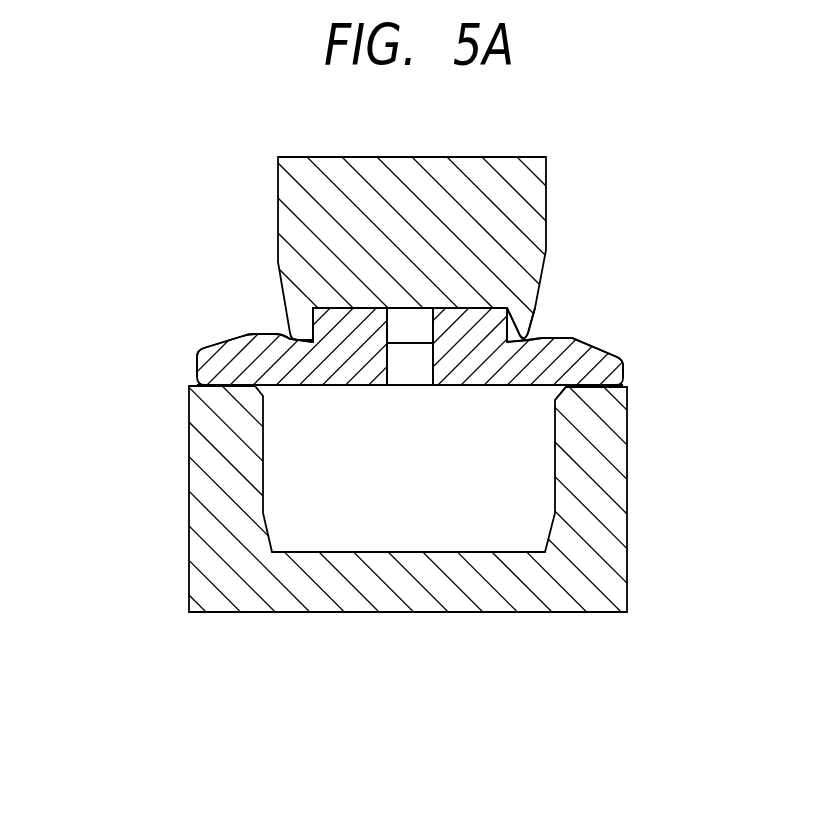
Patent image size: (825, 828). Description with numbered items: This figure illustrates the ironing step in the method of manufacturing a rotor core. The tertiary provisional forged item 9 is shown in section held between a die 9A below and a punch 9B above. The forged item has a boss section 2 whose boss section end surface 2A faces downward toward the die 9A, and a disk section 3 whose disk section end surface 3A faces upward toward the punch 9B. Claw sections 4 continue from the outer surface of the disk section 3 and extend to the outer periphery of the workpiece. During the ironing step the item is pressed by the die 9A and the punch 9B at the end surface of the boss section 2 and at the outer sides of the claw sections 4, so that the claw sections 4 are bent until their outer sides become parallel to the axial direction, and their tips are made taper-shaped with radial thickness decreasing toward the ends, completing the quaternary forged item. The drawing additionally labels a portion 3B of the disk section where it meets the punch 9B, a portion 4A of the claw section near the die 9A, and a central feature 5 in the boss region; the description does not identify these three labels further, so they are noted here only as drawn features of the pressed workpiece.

The boss section 2 is at (458, 322).
The boss section end surface 2A is at (468, 322).
The disk section 3 is at (520, 368).
The disk section end surface 3A is at (532, 390).
The upper sealing portion 3B is at (520, 330).
The claw sections 4 is at (585, 373).
The plate edge portion 4A is at (566, 389).
The hole 5 is at (424, 386).
The tertiary provisional forged item 9 is at (628, 352).
The die 9A is at (633, 563).
The punch 9B is at (550, 201).